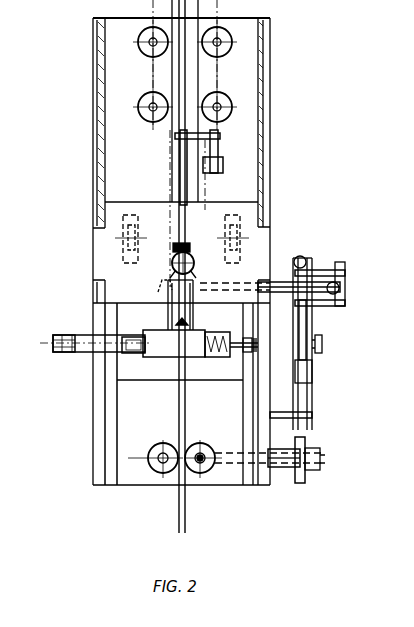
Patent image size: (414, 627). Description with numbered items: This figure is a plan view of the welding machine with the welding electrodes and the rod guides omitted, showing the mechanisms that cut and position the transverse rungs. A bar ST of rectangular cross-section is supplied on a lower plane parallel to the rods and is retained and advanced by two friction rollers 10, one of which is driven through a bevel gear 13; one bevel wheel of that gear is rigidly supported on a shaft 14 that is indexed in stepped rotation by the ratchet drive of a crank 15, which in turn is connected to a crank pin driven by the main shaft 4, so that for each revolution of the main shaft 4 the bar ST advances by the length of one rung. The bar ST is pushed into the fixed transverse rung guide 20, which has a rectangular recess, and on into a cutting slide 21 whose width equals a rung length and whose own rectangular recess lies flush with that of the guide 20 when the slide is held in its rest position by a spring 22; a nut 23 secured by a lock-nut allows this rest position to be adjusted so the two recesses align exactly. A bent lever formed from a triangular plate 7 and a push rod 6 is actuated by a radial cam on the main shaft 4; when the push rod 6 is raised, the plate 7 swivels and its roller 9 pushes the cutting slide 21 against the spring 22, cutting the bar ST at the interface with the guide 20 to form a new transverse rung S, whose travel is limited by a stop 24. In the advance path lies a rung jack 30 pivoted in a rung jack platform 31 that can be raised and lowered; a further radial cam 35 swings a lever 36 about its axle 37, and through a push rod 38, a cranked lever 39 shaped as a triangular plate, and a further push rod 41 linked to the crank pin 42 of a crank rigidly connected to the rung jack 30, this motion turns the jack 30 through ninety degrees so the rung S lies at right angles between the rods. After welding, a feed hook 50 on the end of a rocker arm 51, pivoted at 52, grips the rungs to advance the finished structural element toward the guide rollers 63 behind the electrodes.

The main shaft 4 is at (187, 251).
The push rod 6 is at (52, 345).
The triangular plate 7 is at (80, 356).
The roller 9 is at (133, 337).
The friction rollers 10 is at (158, 444).
The bevel gear 13 is at (213, 445).
The shaft 14 is at (283, 470).
The crank 15 is at (312, 472).
The transverse rung guide 20 is at (194, 318).
The cutting slide 21 is at (166, 358).
The spring 22 is at (220, 358).
The nut 23 is at (250, 358).
The stop 24 is at (178, 244).
The rung jack 30 is at (194, 268).
The rung jack platform 31 is at (179, 248).
The radial cam 35 is at (306, 320).
The lever 36 is at (312, 400).
The axle 37 is at (312, 420).
The push rod 38 is at (302, 257).
The cranked lever 39 is at (332, 262).
The push rod 41 is at (274, 282).
The crank pin 42 is at (160, 288).
The feed hook 50 is at (180, 158).
The rocker arm 51 is at (219, 148).
The pivot 52 is at (220, 170).
The guide rollers 63 is at (149, 97).
The transverse rungs S is at (172, 262).
The bar ST is at (186, 517).